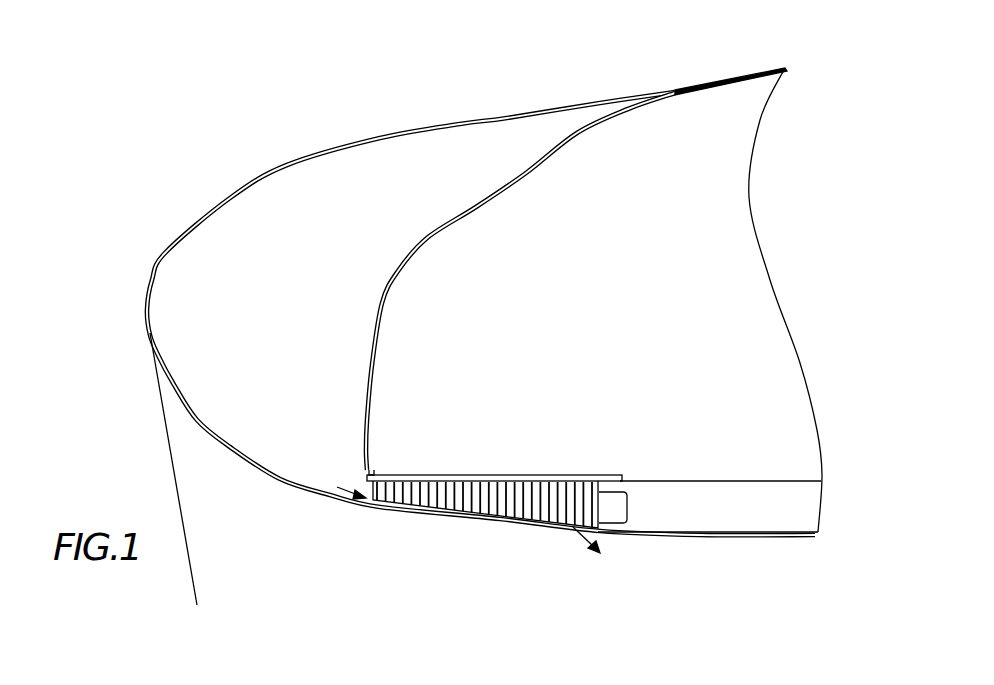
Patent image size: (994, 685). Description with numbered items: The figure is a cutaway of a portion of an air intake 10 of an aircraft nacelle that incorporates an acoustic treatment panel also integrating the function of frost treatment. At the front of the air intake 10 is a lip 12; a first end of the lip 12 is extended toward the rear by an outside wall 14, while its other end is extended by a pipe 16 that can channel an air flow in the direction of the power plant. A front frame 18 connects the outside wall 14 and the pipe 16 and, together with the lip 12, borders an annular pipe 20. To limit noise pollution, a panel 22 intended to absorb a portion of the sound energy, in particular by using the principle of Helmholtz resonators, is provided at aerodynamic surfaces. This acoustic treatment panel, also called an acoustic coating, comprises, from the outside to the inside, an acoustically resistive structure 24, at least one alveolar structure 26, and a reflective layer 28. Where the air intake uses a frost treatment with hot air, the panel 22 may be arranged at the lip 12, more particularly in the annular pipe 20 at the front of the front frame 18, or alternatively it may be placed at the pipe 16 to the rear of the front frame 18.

The air intake 10 is at (223, 150).
The lip 12 is at (152, 278).
The outside wall 14 is at (716, 78).
The pipe 16 is at (704, 540).
The front frame 18 is at (428, 239).
The annular pipe 20 is at (286, 286).
The panel 22 is at (507, 497).
The acoustically resistive structure 24 is at (515, 530).
The alveolar structure 26 is at (445, 490).
The reflective layer 28 is at (477, 483).